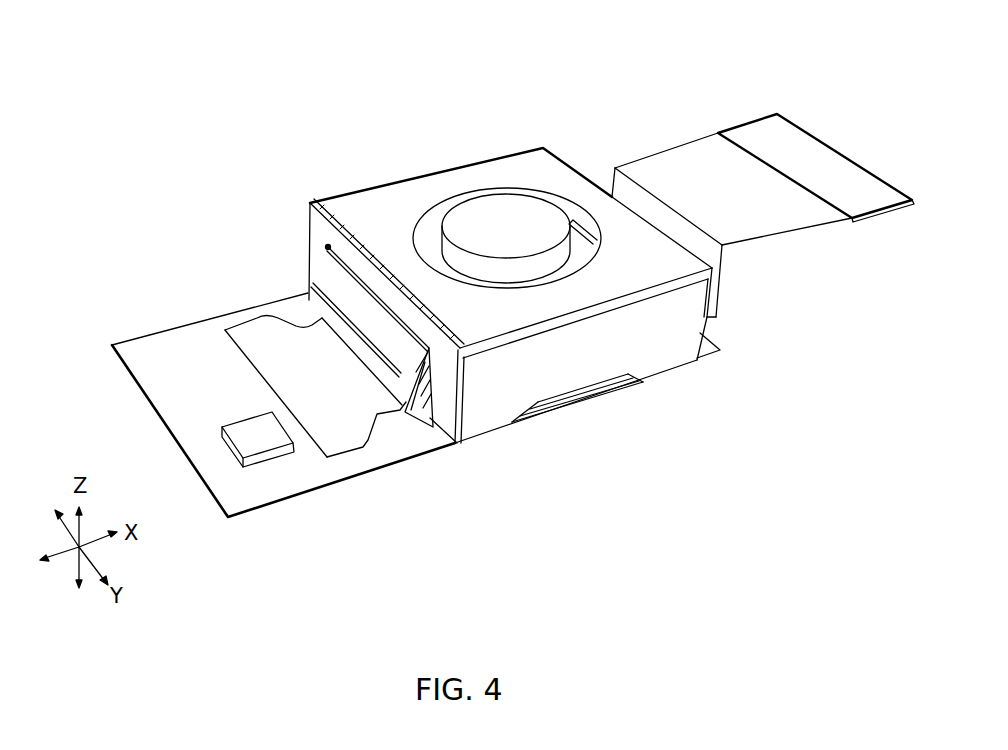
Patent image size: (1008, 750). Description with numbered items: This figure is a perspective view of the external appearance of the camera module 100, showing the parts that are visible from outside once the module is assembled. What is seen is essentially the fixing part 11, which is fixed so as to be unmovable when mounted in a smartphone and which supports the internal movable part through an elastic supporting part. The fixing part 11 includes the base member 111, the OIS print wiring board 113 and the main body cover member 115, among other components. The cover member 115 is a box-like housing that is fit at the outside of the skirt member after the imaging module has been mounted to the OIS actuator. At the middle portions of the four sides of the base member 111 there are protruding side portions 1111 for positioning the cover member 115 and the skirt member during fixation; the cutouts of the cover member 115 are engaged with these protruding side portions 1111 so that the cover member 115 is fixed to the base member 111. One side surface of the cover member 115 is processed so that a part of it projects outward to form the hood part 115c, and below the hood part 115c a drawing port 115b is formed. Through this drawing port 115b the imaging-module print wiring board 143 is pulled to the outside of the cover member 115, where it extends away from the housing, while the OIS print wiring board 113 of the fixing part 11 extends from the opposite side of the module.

The camera module 100 is at (553, 92).
The fixing part 11 is at (551, 307).
The main body cover member 115 is at (570, 187).
The OIS print wiring board 113 is at (767, 218).
The drawing port 115b is at (422, 397).
The hood part 115c is at (326, 249).
The base member 111 is at (621, 414).
The protruding side portion 1111 is at (592, 398).
The imaging-module print wiring board 143 is at (350, 433).